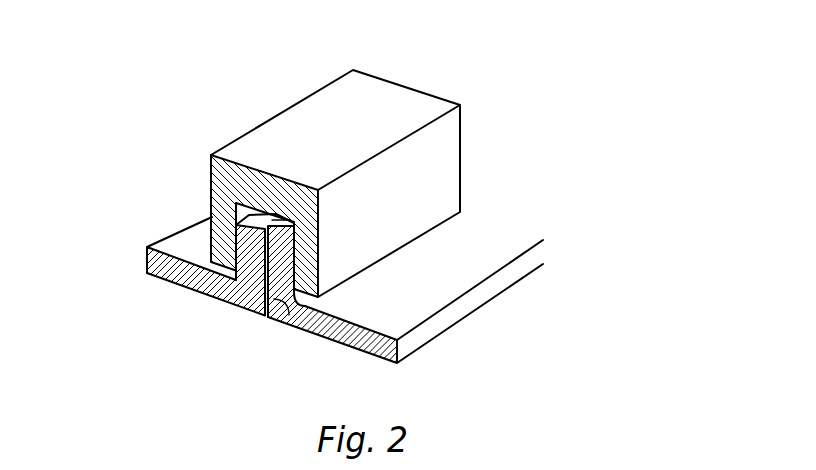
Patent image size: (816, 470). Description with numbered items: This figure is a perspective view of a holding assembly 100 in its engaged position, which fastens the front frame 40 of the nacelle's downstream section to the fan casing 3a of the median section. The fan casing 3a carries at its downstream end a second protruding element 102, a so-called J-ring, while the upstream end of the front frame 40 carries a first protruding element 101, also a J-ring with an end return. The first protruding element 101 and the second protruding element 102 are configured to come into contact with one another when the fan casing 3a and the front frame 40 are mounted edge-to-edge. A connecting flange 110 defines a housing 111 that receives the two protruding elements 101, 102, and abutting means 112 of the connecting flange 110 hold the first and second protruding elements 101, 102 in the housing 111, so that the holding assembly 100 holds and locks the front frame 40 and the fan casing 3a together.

The holding assembly 100 is at (342, 99).
The connecting flange 110 is at (361, 125).
The housing 111 is at (243, 215).
The abutting means 112 is at (225, 242).
The fan casing 3a is at (148, 268).
The second protruding element 102 is at (230, 300).
The first protruding element 101 is at (288, 318).
The front frame 40 is at (393, 360).